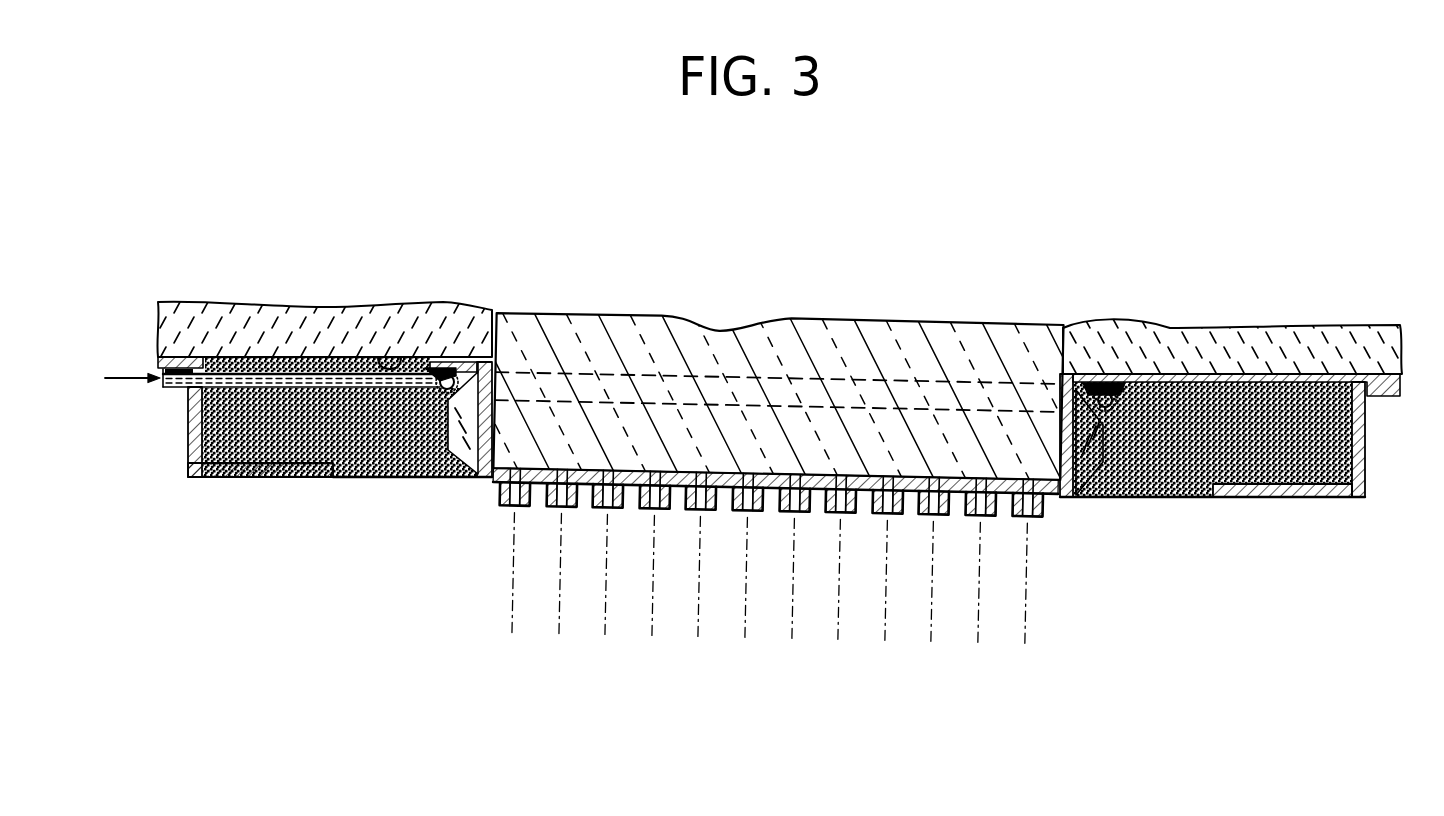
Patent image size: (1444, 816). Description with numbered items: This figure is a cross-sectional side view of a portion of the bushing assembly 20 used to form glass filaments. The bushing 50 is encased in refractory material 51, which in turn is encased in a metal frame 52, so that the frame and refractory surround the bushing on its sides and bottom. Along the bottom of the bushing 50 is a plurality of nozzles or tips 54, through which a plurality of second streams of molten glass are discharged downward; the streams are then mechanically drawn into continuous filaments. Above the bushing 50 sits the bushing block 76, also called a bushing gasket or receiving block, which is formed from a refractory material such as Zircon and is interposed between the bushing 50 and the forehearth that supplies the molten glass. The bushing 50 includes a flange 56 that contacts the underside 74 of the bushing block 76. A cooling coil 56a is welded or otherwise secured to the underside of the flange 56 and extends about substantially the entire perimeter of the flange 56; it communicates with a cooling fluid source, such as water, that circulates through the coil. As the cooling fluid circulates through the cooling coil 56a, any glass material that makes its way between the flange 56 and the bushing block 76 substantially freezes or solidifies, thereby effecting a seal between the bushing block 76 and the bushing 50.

The bushing assembly 20 is at (450, 538).
The bushing 50 is at (1062, 497).
The refractory material 51 is at (1320, 432).
The metal frame 52 is at (1280, 498).
The nozzles or tips 54 is at (1000, 503).
The flange 56 is at (475, 387).
The cooling coil 56a is at (446, 389).
The underside 74 is at (401, 357).
The bushing block 76 is at (308, 326).